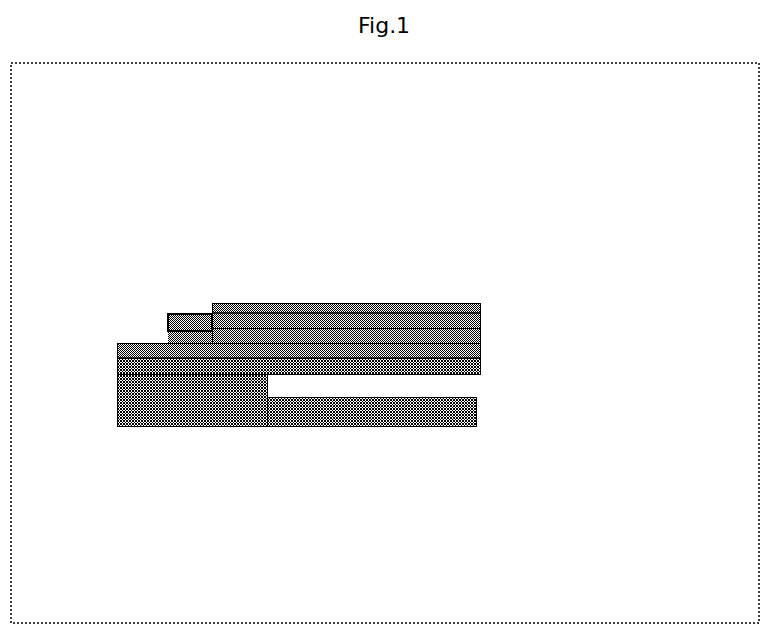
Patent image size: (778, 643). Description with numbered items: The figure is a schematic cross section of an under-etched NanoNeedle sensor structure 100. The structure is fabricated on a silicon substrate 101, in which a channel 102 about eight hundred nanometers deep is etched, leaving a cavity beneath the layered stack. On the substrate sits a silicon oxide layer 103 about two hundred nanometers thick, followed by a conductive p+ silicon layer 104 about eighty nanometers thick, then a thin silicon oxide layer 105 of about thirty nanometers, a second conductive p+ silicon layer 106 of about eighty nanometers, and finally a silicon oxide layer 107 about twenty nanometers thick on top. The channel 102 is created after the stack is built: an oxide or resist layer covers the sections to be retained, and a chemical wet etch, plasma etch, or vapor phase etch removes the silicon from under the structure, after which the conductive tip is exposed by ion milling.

The NanoNeedle sensor structure 100 is at (153, 289).
The Silicon substrate 101 is at (250, 412).
The channel 102 is at (442, 381).
The silicon oxide layer 103 is at (480, 365).
The conductive p+ silicon layer 104 is at (117, 347).
The silicon oxide layer 105 is at (480, 340).
The conductive p+ silicon layer 106 is at (168, 322).
The silicon oxide layer 107 is at (480, 313).